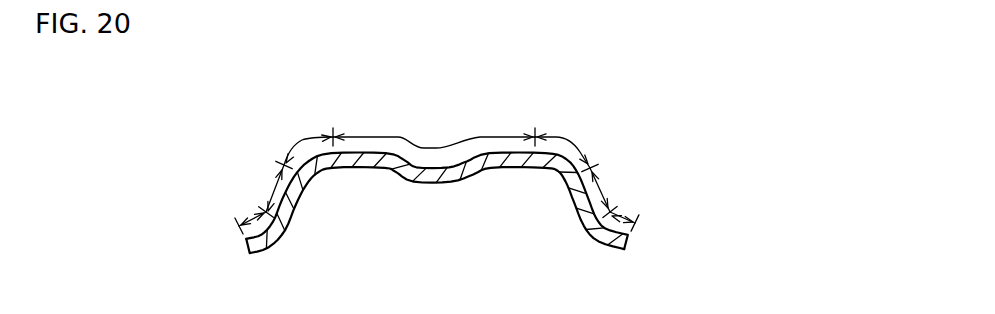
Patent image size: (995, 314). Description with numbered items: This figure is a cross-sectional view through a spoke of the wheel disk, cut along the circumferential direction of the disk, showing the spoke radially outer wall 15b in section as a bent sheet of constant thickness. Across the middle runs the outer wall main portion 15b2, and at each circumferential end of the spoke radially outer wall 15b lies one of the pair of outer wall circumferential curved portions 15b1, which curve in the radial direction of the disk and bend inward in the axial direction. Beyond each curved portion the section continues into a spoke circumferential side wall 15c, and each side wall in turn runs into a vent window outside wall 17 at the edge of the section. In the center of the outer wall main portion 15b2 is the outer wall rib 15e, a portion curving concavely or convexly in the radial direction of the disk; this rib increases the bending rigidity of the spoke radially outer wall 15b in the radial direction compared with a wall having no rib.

The spoke radially outer wall 15b is at (580, 93).
The outer wall circumferential curved portion 15b1 is at (300, 141).
The outer wall main portion 15b2 is at (420, 148).
The spoke circumferential side wall 15c is at (274, 195).
The outer wall rib 15e is at (444, 170).
The vent window outside wall 17 is at (252, 220).